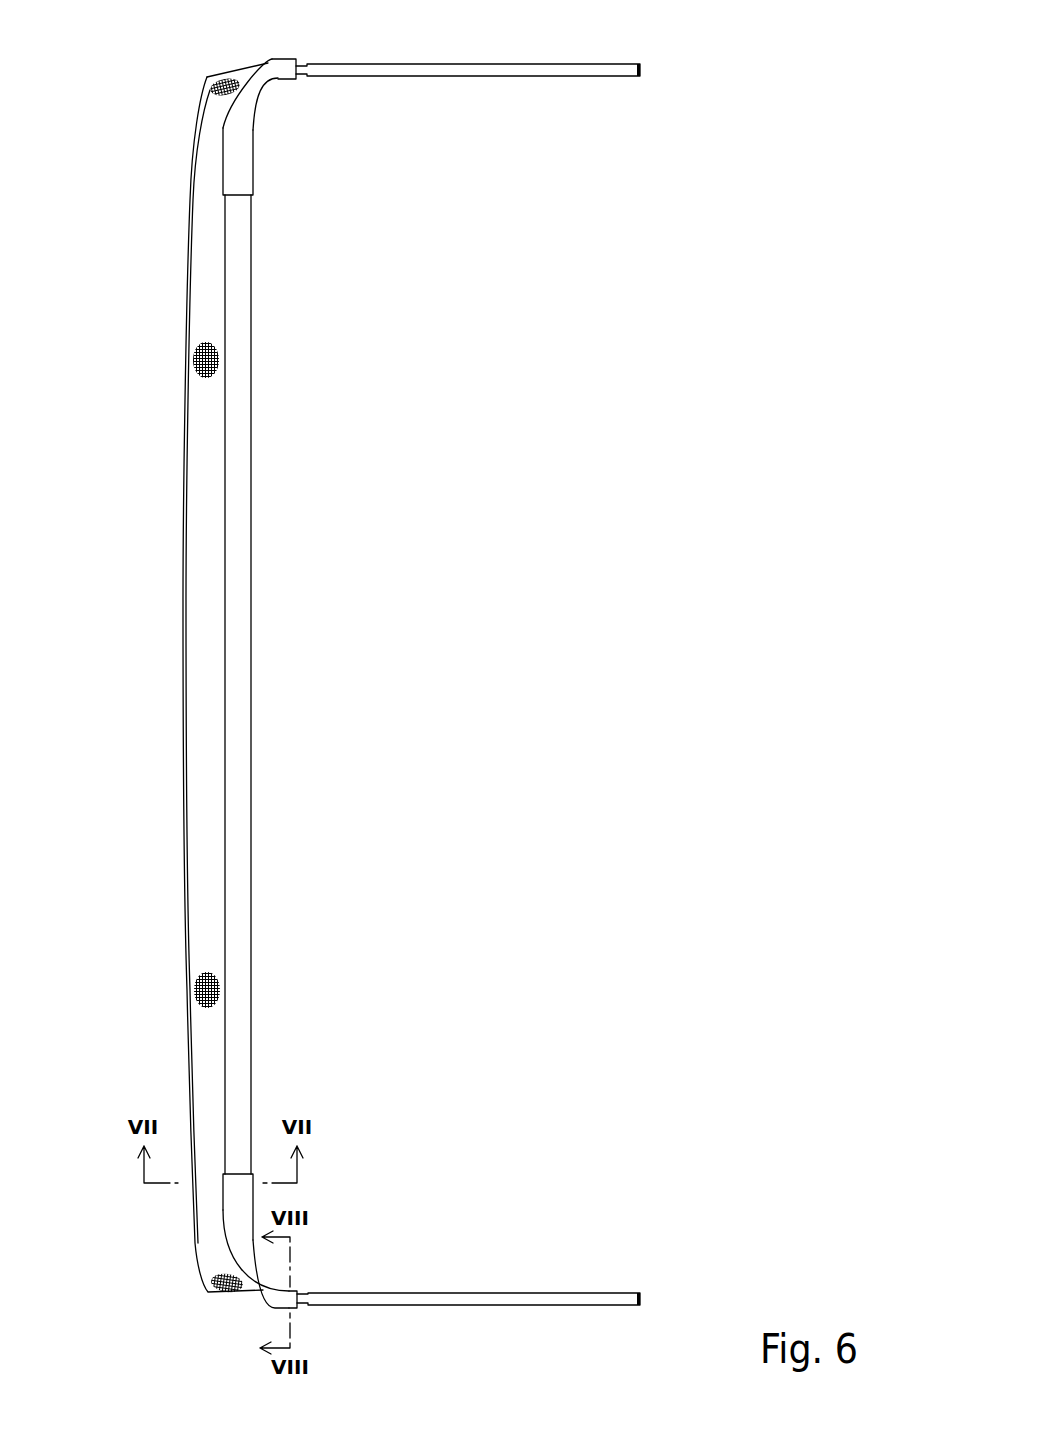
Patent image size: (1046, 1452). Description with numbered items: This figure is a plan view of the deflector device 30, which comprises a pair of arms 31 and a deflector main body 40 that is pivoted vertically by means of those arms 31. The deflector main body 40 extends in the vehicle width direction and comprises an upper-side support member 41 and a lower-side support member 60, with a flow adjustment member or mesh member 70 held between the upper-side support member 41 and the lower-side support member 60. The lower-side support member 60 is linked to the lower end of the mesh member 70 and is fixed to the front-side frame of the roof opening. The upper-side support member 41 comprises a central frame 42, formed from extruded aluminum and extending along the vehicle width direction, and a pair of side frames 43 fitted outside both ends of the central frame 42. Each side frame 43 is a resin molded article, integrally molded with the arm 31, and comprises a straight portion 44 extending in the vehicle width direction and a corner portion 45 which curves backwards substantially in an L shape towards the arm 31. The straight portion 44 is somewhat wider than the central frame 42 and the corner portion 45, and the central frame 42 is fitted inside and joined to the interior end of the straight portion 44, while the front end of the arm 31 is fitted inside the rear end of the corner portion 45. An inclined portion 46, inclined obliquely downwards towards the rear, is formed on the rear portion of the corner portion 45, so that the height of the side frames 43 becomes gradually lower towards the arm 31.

The deflector device 30 is at (133, 100).
The arm 31 is at (433, 64).
The deflector main body 40 is at (295, 467).
The upper-side support member 41 is at (253, 585).
The central frame 42 is at (240, 322).
The side frame 43 is at (257, 153).
The straight portion 44 is at (228, 166).
The corner portion 45 is at (277, 72).
The inclined portion 46 is at (283, 63).
The lower-side support member 60 is at (183, 597).
The mesh member 70 is at (203, 658).